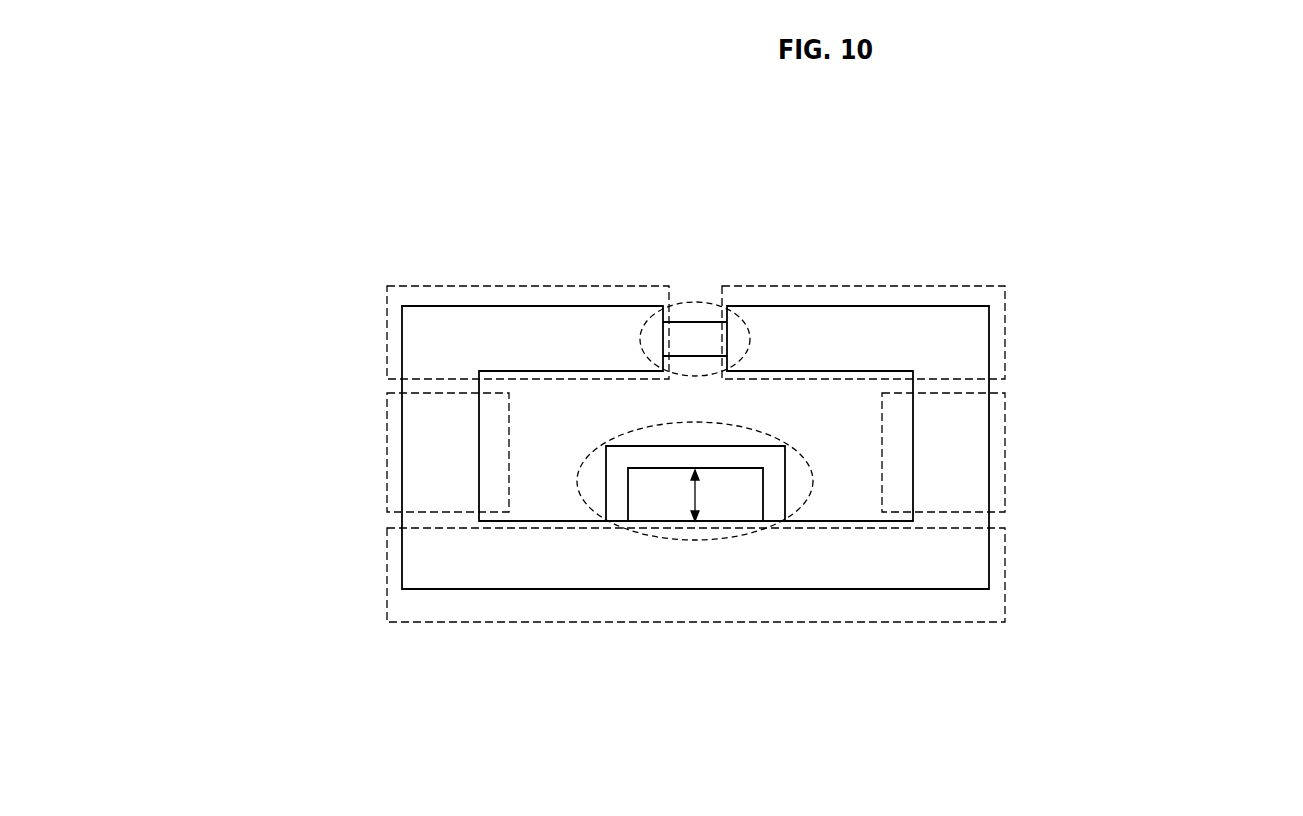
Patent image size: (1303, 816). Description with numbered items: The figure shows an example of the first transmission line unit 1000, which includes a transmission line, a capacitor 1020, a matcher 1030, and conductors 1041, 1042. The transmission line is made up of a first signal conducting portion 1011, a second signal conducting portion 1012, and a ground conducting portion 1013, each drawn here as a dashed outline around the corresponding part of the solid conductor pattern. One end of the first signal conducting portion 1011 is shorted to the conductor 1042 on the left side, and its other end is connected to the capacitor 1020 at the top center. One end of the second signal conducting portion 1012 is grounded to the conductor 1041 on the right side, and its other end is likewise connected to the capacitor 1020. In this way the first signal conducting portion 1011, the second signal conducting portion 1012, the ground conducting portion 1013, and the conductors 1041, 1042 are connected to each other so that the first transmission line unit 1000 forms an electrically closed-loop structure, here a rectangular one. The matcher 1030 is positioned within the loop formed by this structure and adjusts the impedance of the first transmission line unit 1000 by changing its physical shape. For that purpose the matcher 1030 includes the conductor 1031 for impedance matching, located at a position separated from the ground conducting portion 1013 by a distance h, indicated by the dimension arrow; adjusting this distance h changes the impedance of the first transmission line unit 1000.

The first transmission line unit 1000 is at (729, 107).
The first signal conducting portion 1011 is at (492, 286).
The second signal conducting portion 1012 is at (902, 286).
The ground conducting portion 1013 is at (898, 622).
The capacitor 1020 is at (691, 302).
The matcher 1030 is at (727, 538).
The conductor 1031 is at (649, 458).
The conductor 1041 is at (1005, 450).
The conductor 1042 is at (387, 452).